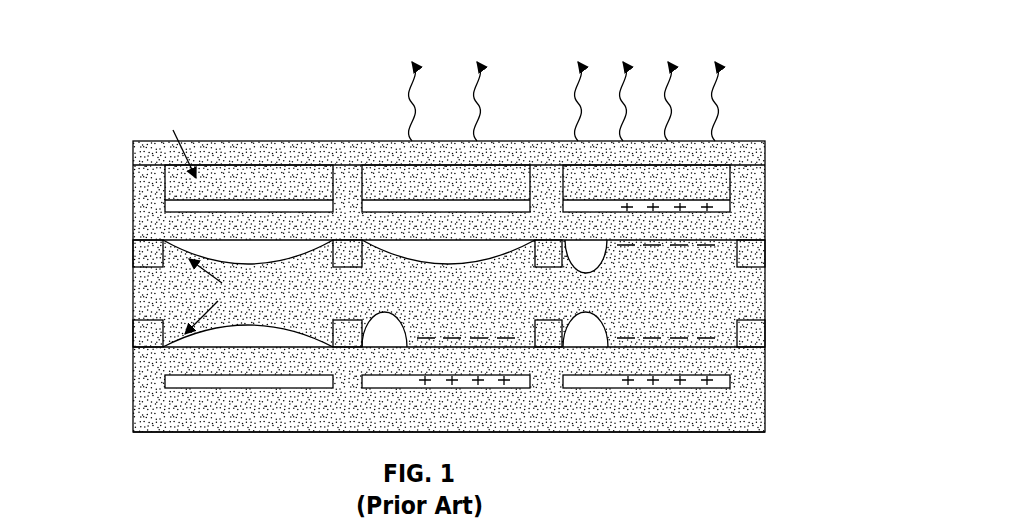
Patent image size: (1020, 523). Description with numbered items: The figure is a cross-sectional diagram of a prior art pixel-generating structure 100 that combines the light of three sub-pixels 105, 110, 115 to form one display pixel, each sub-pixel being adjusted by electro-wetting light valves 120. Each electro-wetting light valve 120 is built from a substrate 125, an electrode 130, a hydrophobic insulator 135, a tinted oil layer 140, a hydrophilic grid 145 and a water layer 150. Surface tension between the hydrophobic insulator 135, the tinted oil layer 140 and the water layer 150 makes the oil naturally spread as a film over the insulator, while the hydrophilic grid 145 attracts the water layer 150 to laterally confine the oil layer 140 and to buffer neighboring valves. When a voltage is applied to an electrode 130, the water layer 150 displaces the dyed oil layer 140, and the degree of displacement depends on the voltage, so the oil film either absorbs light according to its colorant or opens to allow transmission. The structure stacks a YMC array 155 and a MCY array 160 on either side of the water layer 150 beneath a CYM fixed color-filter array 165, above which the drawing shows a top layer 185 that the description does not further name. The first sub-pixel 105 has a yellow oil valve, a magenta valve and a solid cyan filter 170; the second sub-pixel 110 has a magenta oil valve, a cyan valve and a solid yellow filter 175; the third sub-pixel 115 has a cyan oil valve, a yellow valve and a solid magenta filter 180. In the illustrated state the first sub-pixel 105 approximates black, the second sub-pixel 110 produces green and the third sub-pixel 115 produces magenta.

The pixel-generating structure 100 is at (767, 79).
The first sub-pixel 105 is at (220, 90).
The second sub-pixel 110 is at (448, 88).
The third sub-pixel 115 is at (642, 87).
The electro-wetting light valve 120 is at (720, 255).
The substrate 125 is at (140, 415).
The electrode 130 is at (165, 378).
The hydrophobic insulator 135 is at (748, 368).
The tinted oil layer 140 is at (397, 310).
The hydrophilic grid 145 is at (138, 340).
The water layer 150 is at (732, 303).
The YMC array 155 is at (123, 333).
The MCY array 160 is at (123, 260).
The CYM fixed color-filter array 165 is at (146, 194).
The solid cyan filter 170 is at (293, 173).
The solid yellow filter 175 is at (397, 173).
The solid magenta filter 180 is at (573, 173).
The top substrate 185 is at (750, 141).